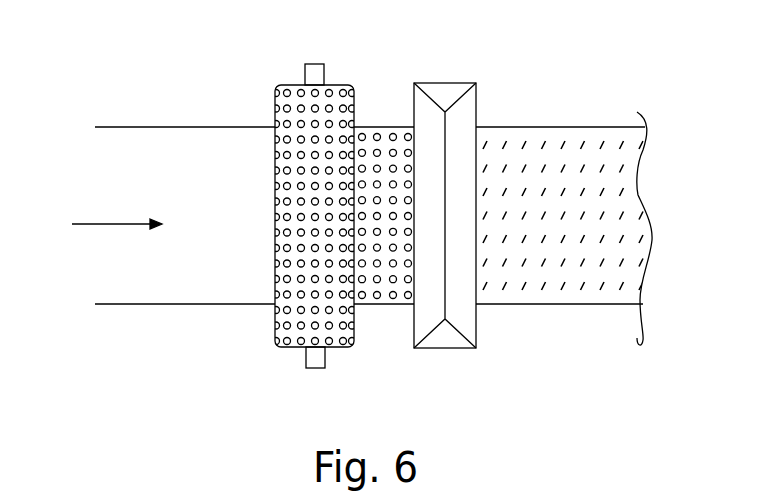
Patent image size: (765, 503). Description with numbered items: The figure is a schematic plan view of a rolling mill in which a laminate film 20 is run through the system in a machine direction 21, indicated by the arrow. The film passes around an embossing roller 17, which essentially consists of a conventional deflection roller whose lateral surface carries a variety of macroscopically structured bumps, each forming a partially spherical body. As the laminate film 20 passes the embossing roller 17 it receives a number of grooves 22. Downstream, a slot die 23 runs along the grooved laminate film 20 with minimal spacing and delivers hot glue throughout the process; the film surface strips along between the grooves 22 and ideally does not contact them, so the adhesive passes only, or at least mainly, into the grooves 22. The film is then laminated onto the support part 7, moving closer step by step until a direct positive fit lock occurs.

The laminate film 20 is at (134, 145).
The machine direction 21 is at (97, 223).
The embossing roller 17 is at (283, 347).
The grooves 22 is at (372, 147).
The slot die 23 is at (445, 348).
The support part 7 is at (493, 148).